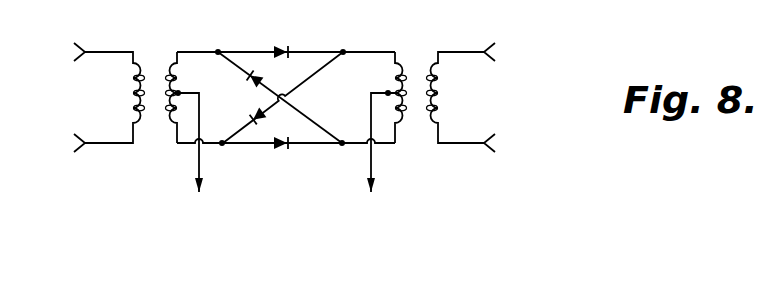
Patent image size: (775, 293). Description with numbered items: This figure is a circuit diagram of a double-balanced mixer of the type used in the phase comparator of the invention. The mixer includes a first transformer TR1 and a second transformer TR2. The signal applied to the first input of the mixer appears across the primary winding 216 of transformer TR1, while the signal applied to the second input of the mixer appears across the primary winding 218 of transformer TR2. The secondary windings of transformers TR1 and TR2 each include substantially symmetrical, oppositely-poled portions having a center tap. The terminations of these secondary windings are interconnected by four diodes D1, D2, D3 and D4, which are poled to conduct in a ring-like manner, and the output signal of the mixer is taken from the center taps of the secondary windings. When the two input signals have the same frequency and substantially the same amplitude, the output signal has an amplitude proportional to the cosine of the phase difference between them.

The first transformer TR1 is at (135, 101).
The primary winding 216 is at (131, 96).
The second transformer TR2 is at (432, 101).
The primary winding 218 is at (440, 90).
The diode D1 is at (287, 47).
The diode D2 is at (250, 118).
The diode D3 is at (284, 147).
The diode D4 is at (247, 76).